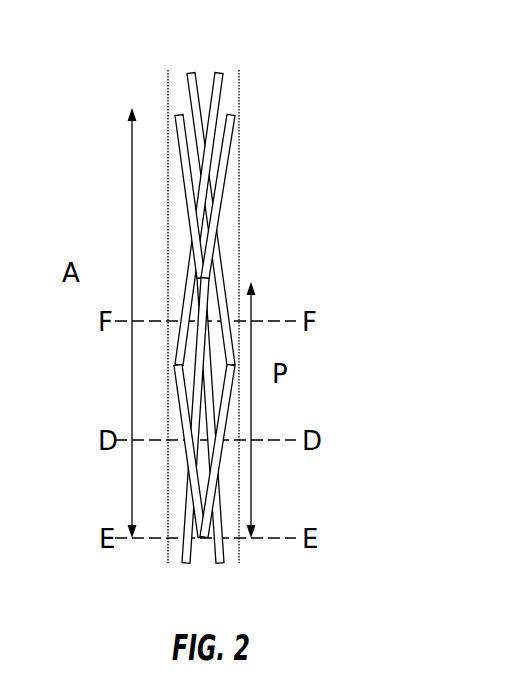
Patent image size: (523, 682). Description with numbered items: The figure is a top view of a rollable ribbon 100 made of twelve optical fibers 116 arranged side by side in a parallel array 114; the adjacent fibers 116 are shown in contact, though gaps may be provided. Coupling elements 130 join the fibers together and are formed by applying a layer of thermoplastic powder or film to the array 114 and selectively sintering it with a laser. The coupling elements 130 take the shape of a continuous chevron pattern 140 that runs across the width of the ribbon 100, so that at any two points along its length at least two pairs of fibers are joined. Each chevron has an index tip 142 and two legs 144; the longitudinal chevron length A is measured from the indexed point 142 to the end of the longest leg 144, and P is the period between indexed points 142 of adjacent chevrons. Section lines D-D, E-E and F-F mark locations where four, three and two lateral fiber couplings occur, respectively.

The rollable ribbon 100 is at (246, 310).
The parallel array 114 is at (160, 90).
The optical fibers 116 is at (240, 88).
The coupling elements 130 is at (220, 157).
The continuous chevron pattern 140 is at (194, 335).
The index tip 142 is at (200, 540).
The legs 144 is at (174, 121).